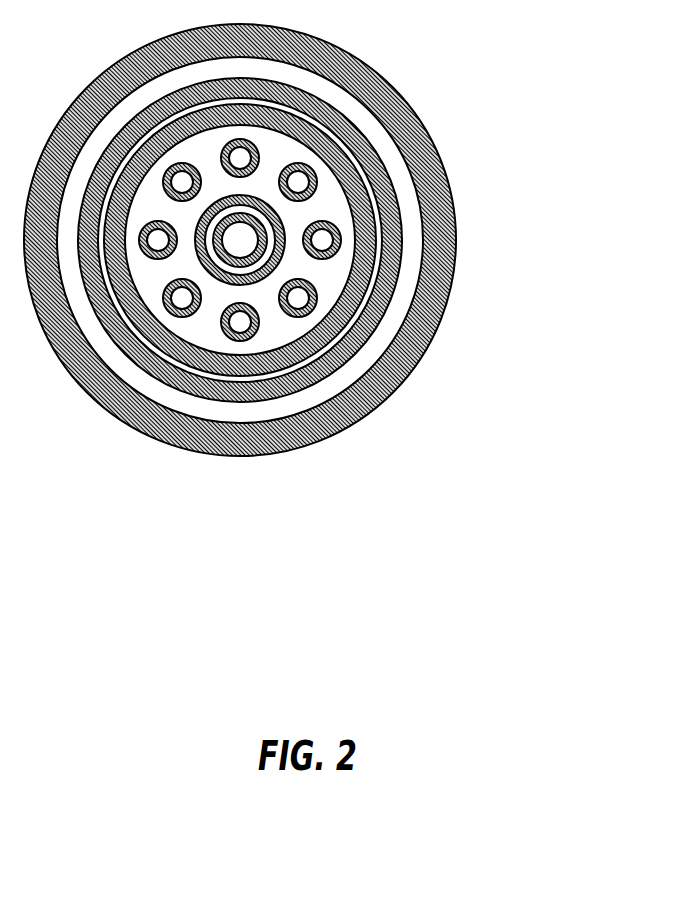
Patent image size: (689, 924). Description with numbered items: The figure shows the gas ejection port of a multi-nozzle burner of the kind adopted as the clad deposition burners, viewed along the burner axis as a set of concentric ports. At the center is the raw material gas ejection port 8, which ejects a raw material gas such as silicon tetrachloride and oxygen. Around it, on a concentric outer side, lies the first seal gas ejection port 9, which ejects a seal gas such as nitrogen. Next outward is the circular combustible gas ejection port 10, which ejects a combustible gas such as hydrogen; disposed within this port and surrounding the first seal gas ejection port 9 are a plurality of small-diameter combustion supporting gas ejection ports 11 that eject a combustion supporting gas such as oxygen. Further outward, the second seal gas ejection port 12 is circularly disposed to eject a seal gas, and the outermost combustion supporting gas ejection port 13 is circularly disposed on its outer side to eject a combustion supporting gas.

The raw material gas ejection port 8 is at (191, 421).
The first seal gas ejection port 9 is at (259, 424).
The combustible gas ejection port 10 is at (280, 396).
The small-diameter combustion supporting gas ejection ports 11 is at (310, 303).
The second seal gas ejection port 12 is at (320, 242).
The combustion supporting gas ejection port 13 is at (309, 240).